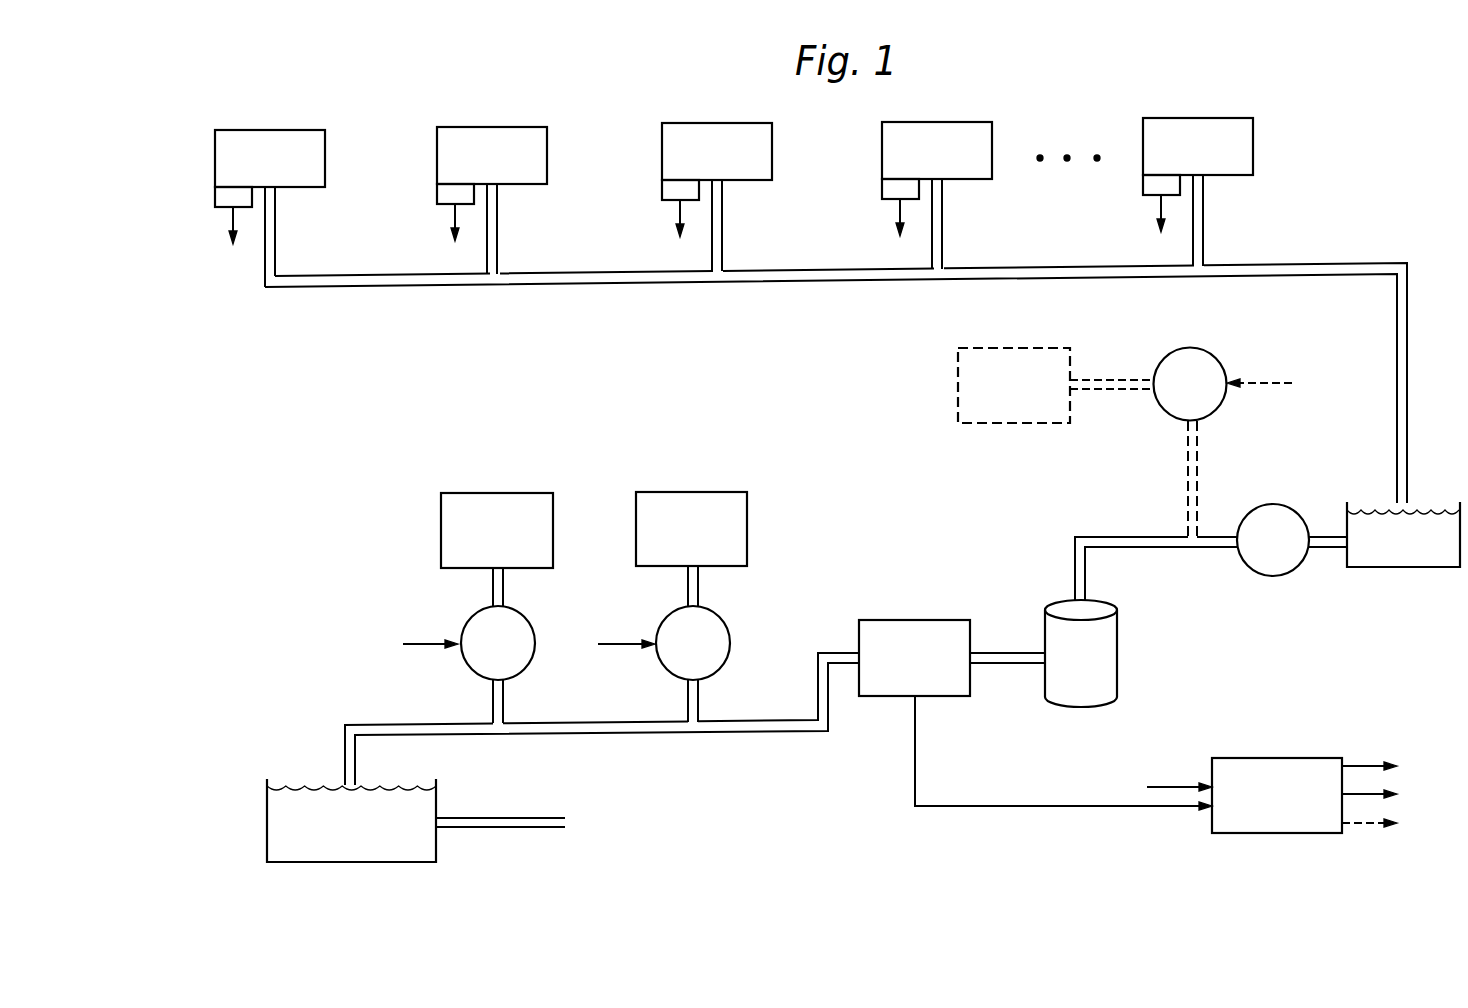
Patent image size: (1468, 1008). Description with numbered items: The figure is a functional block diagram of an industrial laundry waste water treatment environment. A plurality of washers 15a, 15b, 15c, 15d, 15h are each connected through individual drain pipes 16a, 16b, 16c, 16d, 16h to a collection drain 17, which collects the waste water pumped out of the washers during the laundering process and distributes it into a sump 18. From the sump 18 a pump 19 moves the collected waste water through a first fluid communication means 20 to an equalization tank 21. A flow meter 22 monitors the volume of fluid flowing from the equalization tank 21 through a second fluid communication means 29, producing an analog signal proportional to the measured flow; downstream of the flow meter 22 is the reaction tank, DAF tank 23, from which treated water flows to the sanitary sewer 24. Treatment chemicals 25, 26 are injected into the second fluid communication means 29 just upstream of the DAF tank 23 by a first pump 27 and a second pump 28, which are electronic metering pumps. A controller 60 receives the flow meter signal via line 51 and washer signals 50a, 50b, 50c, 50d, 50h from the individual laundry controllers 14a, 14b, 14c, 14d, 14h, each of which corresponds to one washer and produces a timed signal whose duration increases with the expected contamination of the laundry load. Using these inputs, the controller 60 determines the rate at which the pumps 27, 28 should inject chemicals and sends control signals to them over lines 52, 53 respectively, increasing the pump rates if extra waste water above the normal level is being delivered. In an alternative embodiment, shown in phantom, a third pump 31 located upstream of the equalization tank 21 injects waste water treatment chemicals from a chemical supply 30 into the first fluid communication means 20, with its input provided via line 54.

The washer 15a is at (233, 130).
The washer 15b is at (492, 136).
The washer 15c is at (717, 132).
The washer 15d is at (937, 131).
The washer 15h is at (1198, 127).
The laundry controller 14a is at (215, 198).
The laundry controller 14b is at (416, 205).
The laundry controller 14c is at (641, 201).
The laundry controller 14d is at (861, 200).
The laundry controller 14h is at (1122, 196).
The washer signal 50a is at (228, 216).
The washer signal 50b is at (422, 234).
The washer signal 50c is at (647, 230).
The washer signal 50d is at (867, 229).
The washer signal 50h is at (1128, 225).
The drain pipe 16a is at (273, 253).
The drain pipe 16b is at (528, 229).
The drain pipe 16c is at (753, 225).
The drain pipe 16d is at (973, 224).
The drain pipe 16h is at (1234, 220).
The collection drain 17 is at (1328, 263).
The sump 18 is at (1378, 567).
The pump 19 is at (1277, 577).
The first fluid communication means 20 is at (1147, 537).
The equalization tank 21 is at (1120, 673).
The flow meter 22 is at (875, 620).
The DAF tank 23 is at (437, 843).
The sanitary sewer 24 is at (650, 878).
The treatment chemical 25 is at (467, 493).
The treatment chemical 26 is at (662, 492).
The first pump 27 is at (535, 643).
The second pump 28 is at (730, 643).
The second fluid communication means 29 is at (555, 728).
The chemical supply 30 is at (958, 375).
The third pump 31 is at (1190, 347).
The line 51 is at (1187, 813).
The line 52 is at (433, 641).
The line 53 is at (628, 641).
The line 54 is at (1255, 380).
The controller 60 is at (1267, 833).